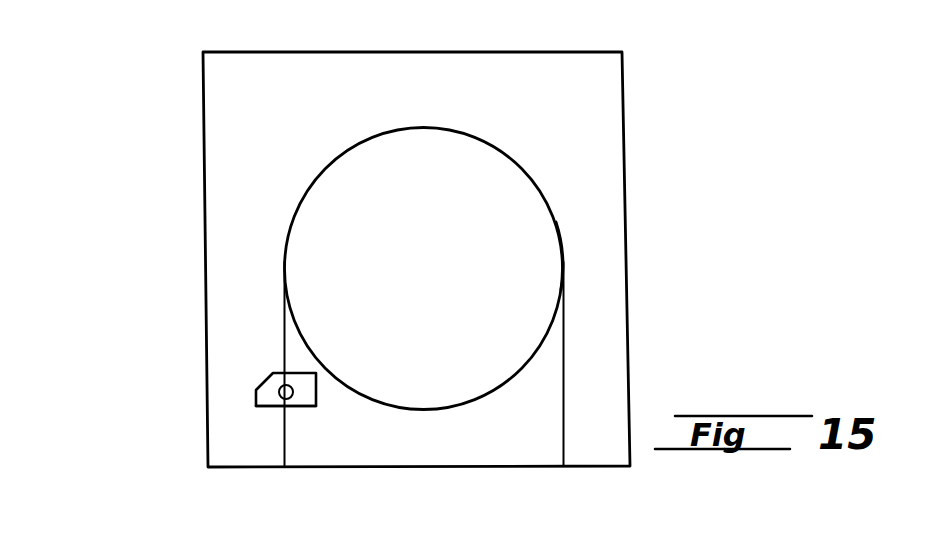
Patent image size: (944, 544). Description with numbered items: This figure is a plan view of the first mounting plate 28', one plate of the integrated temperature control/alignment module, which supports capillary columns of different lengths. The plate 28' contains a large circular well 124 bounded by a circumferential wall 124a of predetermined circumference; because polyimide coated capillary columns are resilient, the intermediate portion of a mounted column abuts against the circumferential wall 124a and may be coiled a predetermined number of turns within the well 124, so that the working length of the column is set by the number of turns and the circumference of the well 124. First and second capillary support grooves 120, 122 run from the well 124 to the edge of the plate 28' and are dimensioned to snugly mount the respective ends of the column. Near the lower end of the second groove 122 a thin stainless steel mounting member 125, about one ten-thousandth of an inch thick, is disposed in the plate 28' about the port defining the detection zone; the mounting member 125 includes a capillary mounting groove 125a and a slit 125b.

The first mounting plate 28' is at (498, 247).
The first capillary support groove 120 is at (567, 438).
The second capillary support groove 122 is at (288, 445).
The well 124 is at (447, 280).
The circumferential wall 124a is at (558, 237).
The mounting member 125 is at (236, 391).
The capillary mounting groove 125a is at (272, 404).
The slit 125b is at (280, 386).